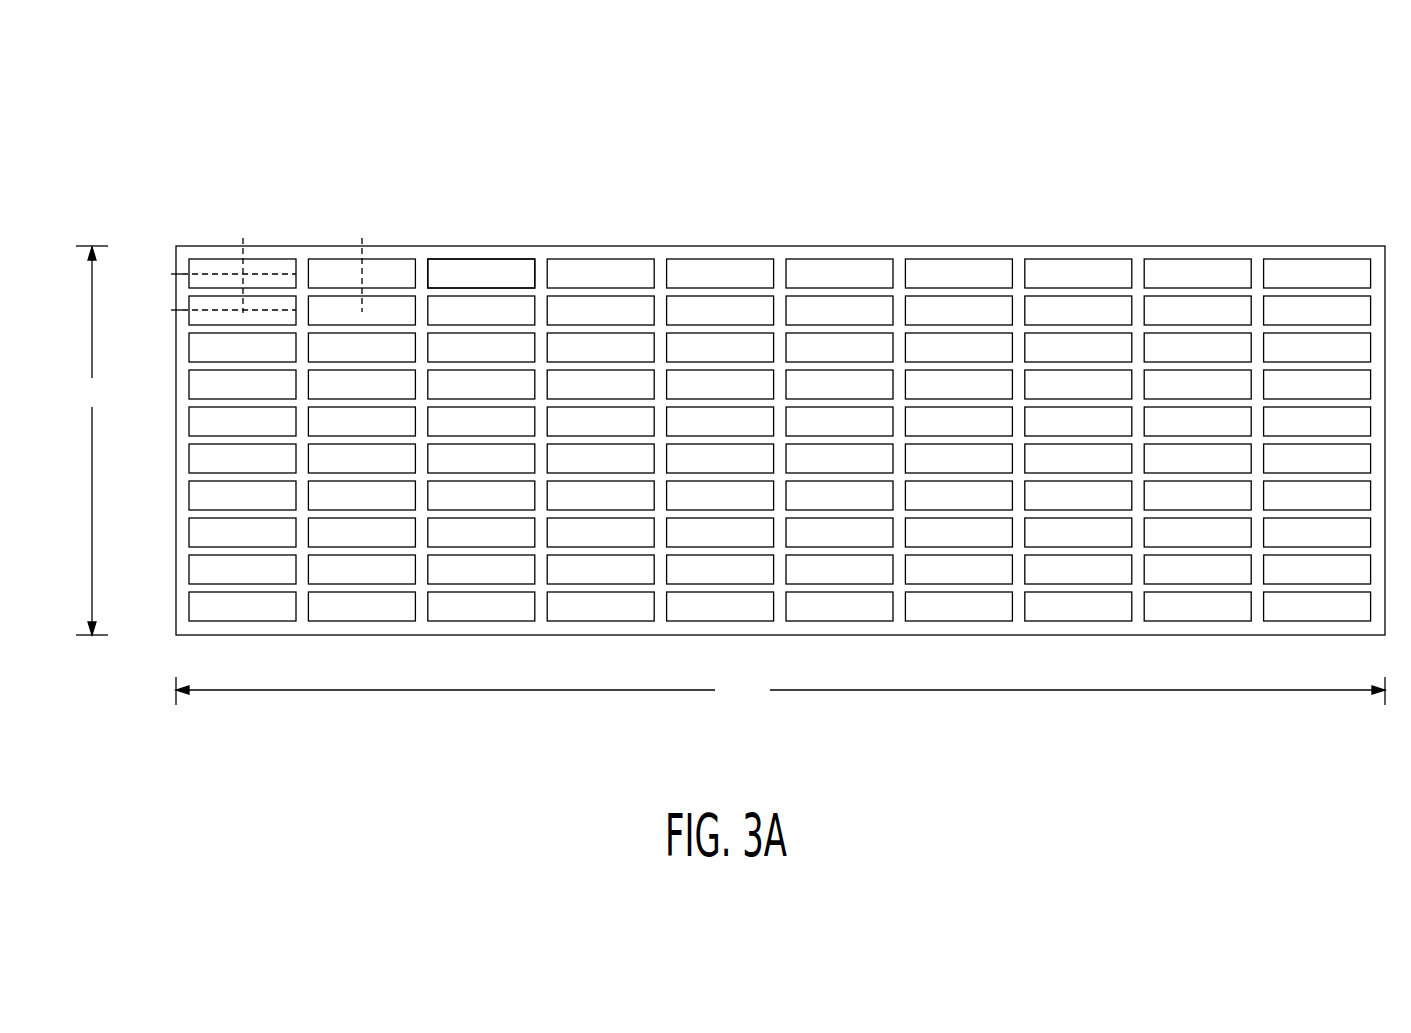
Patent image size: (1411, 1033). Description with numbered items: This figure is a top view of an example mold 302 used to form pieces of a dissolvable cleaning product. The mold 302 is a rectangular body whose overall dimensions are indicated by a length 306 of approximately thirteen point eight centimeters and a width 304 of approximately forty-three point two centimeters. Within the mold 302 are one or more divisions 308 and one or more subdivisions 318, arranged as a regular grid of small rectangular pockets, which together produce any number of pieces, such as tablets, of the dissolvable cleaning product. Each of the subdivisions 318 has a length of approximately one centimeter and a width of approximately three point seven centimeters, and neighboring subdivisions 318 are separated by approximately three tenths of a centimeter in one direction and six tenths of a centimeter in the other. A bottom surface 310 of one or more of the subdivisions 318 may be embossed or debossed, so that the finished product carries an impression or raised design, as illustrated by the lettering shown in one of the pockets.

The mold 302 is at (752, 355).
The width 304 is at (780, 690).
The length 306 is at (92, 440).
The divisions 308 is at (162, 247).
The bottom surface 310 is at (1317, 622).
The subdivisions 318 is at (483, 270).